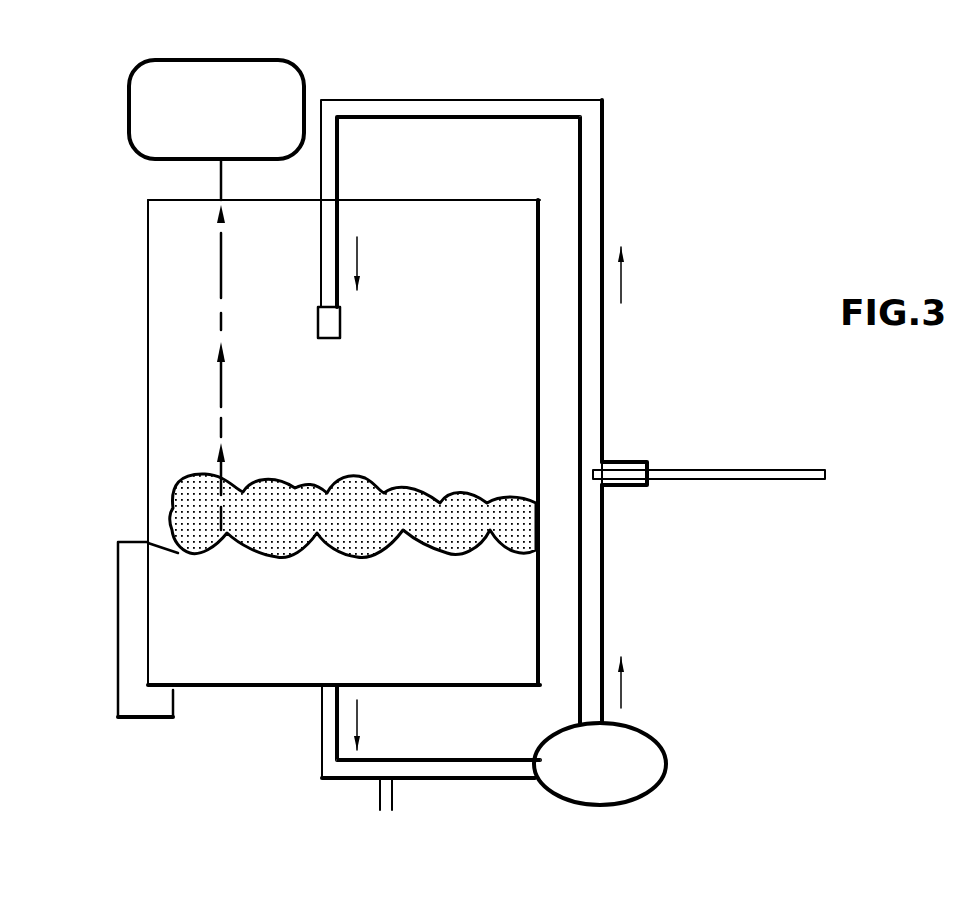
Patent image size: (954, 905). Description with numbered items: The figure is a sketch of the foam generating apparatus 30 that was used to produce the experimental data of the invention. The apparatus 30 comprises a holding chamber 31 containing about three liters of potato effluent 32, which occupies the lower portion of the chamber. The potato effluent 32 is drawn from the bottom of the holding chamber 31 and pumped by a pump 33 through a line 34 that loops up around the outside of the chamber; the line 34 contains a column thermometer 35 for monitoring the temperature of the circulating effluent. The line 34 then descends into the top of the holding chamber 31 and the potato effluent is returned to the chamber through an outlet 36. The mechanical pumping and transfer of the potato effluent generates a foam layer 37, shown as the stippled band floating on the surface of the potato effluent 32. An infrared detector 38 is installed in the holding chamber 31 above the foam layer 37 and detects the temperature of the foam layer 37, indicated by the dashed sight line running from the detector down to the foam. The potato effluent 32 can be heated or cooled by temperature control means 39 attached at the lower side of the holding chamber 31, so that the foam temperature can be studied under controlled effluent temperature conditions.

The apparatus 30 is at (637, 76).
The holding chamber 31 is at (445, 392).
The potato effluent 32 is at (355, 640).
The pump 33 is at (635, 762).
The line 34 is at (597, 578).
The column thermometer 35 is at (758, 474).
The outlet 36 is at (318, 322).
The foam layer 37 is at (357, 510).
The infrared detector 38 is at (281, 67).
The temperature control means 39 is at (132, 633).